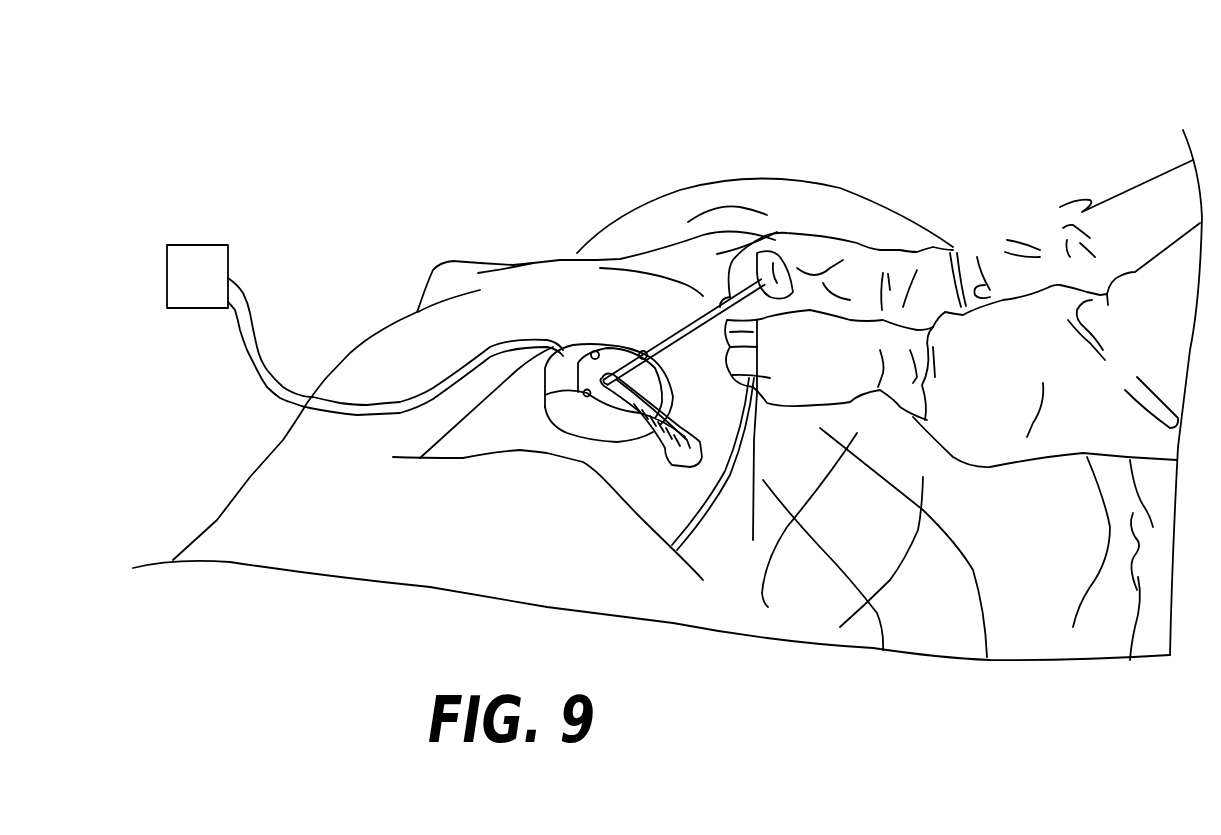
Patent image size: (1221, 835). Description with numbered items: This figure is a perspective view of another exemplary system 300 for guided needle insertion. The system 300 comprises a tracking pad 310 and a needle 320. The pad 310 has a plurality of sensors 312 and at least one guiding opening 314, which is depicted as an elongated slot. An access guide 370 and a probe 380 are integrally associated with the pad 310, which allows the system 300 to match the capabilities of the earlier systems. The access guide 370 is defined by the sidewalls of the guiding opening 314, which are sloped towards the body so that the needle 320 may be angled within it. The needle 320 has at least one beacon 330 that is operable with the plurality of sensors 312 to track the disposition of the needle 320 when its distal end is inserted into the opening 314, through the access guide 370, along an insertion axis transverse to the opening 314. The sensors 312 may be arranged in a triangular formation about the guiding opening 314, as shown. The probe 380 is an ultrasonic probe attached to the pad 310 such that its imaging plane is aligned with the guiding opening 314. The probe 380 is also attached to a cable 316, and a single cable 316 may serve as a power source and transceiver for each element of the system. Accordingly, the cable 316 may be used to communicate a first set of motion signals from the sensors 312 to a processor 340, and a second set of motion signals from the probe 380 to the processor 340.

The system 300 is at (503, 108).
The tracking pad 310 is at (567, 432).
The sensors 312 is at (547, 392).
The guiding opening 314 is at (653, 433).
The cable 316 is at (300, 400).
The needle 320 is at (763, 243).
The beacon 330 is at (753, 540).
The processor 340 is at (218, 287).
The access guide 370 is at (614, 372).
The probe 380 is at (565, 349).